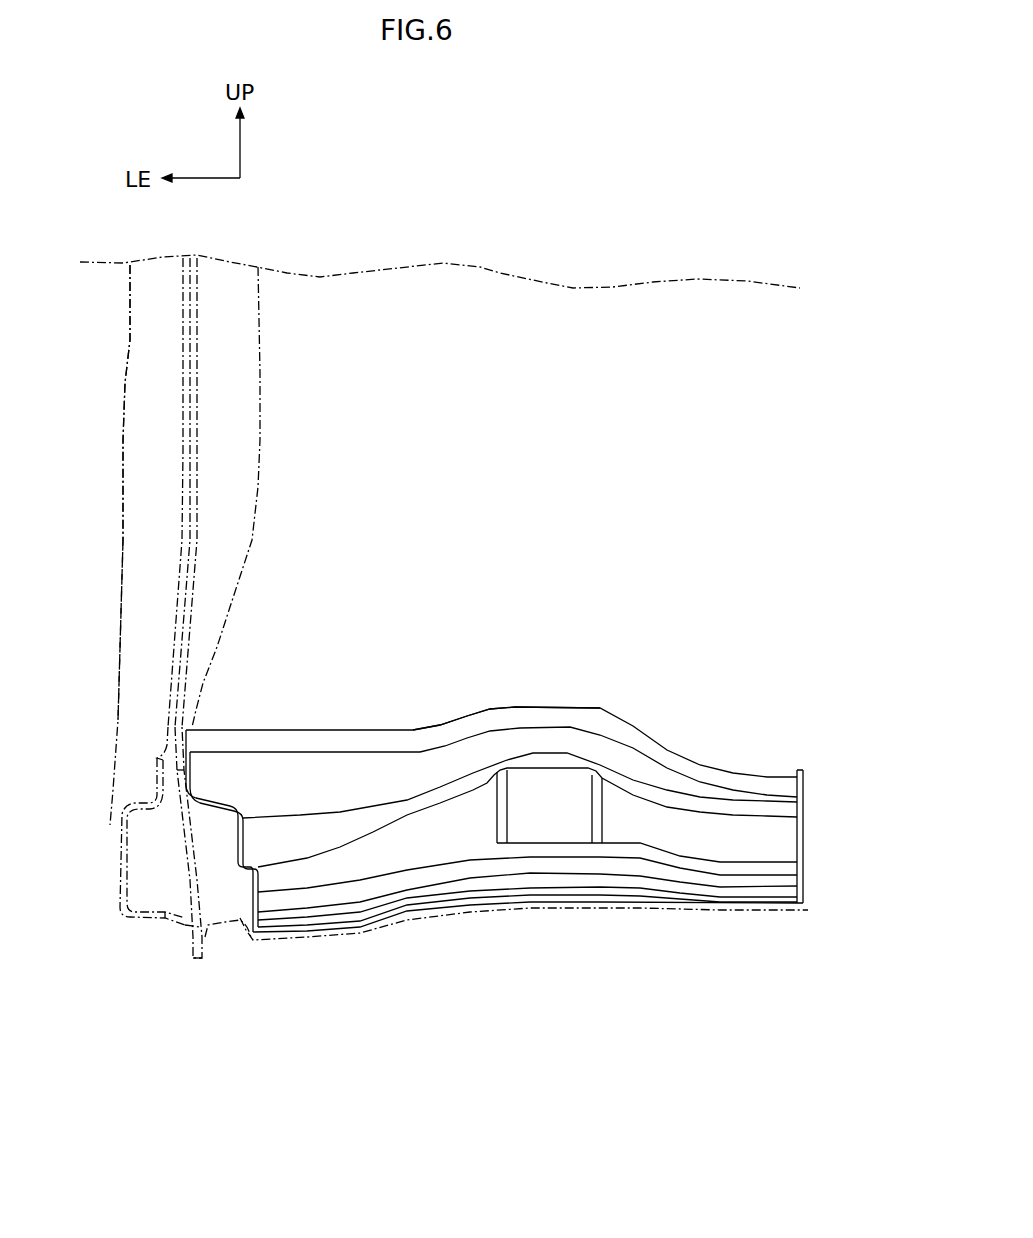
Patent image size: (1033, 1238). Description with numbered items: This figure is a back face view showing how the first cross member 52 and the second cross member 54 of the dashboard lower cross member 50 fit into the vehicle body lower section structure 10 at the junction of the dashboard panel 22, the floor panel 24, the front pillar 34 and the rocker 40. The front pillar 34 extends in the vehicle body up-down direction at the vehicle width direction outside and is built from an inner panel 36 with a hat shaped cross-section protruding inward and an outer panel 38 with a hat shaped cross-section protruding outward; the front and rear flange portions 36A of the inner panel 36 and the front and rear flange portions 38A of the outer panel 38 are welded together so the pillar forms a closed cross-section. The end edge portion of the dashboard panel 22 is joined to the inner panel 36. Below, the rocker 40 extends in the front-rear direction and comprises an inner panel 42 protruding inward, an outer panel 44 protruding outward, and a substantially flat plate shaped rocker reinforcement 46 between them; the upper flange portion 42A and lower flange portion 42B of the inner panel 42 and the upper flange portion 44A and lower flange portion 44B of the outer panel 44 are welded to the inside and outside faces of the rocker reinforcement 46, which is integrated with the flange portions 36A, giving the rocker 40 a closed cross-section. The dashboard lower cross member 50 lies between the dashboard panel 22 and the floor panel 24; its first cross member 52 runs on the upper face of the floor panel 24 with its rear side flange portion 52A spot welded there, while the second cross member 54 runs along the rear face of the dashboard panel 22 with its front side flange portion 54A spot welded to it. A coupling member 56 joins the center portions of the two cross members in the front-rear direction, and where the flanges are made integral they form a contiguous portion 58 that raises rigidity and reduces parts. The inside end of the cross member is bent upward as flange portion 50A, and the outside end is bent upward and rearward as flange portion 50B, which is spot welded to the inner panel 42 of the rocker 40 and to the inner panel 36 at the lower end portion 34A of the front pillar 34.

The vehicle body lower section structure 10 is at (524, 980).
The dashboard panel 22 is at (580, 288).
The floor panel 24 is at (458, 912).
The front pillar 34 is at (110, 541).
The lower end portion of the front pillar 34A is at (118, 725).
The inner panel 36 is at (266, 492).
The front and rear flange portions of the inner panel 36A is at (200, 453).
The outer panel 38 is at (122, 532).
The front and rear flange portions of the outer panel 38A is at (177, 587).
The rocker 40 is at (168, 872).
The inner panel 42 is at (238, 950).
The upper flange portion 42A is at (188, 778).
The lower flange portion 42B is at (205, 962).
The outer panel 44 is at (118, 898).
The upper flange portion 44A is at (160, 760).
The lower flange portion 44B is at (192, 930).
The rocker reinforcement 46 is at (167, 895).
The dashboard lower cross member 50 is at (513, 821).
The flange portion 50A is at (805, 843).
The flange portion 50B is at (253, 852).
The first cross member 52 is at (703, 860).
The rear side flange portion 52A is at (643, 883).
The second cross member 54 is at (422, 765).
The front side flange portion 54A is at (563, 720).
The coupling member 56 is at (562, 815).
The contiguous portion 58 is at (755, 830).